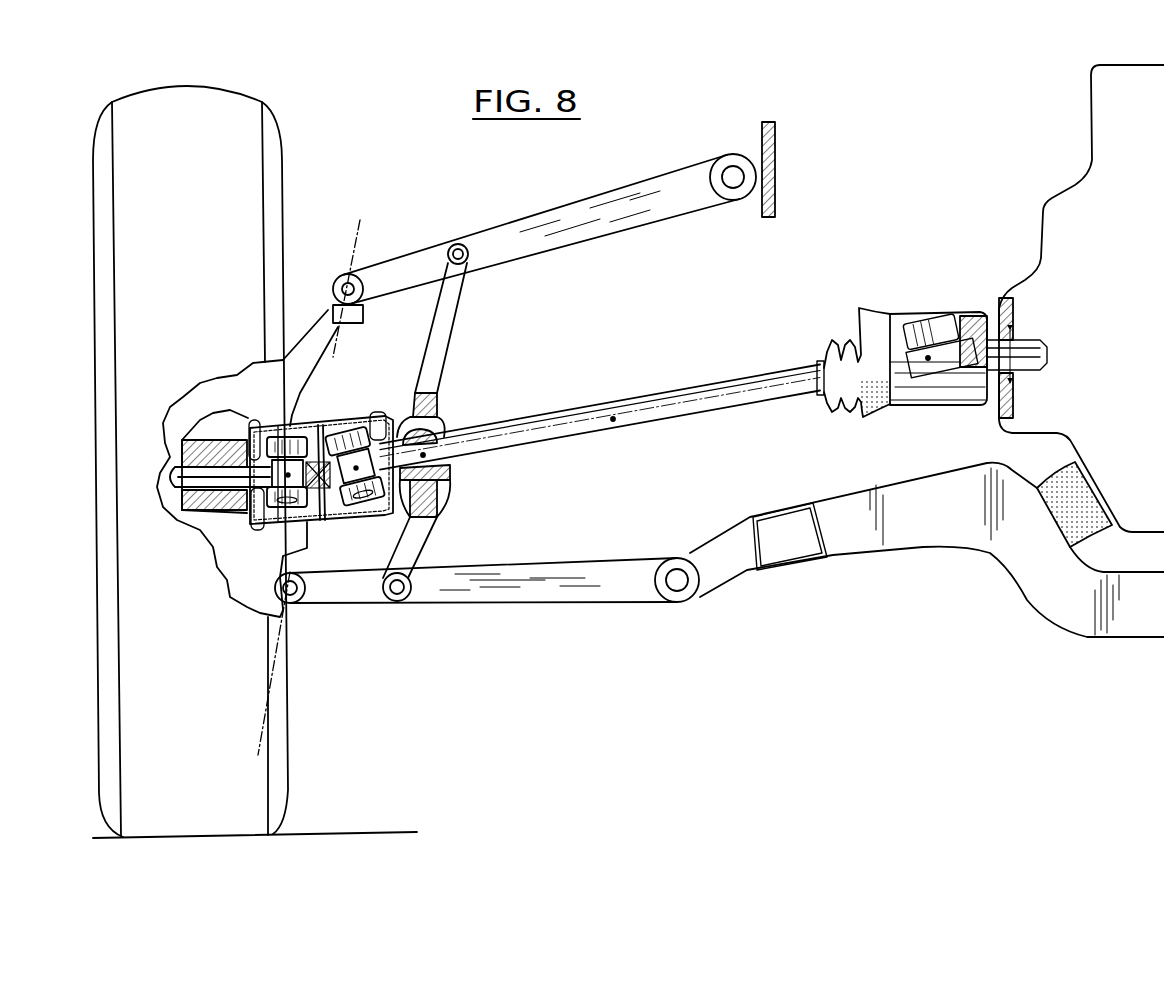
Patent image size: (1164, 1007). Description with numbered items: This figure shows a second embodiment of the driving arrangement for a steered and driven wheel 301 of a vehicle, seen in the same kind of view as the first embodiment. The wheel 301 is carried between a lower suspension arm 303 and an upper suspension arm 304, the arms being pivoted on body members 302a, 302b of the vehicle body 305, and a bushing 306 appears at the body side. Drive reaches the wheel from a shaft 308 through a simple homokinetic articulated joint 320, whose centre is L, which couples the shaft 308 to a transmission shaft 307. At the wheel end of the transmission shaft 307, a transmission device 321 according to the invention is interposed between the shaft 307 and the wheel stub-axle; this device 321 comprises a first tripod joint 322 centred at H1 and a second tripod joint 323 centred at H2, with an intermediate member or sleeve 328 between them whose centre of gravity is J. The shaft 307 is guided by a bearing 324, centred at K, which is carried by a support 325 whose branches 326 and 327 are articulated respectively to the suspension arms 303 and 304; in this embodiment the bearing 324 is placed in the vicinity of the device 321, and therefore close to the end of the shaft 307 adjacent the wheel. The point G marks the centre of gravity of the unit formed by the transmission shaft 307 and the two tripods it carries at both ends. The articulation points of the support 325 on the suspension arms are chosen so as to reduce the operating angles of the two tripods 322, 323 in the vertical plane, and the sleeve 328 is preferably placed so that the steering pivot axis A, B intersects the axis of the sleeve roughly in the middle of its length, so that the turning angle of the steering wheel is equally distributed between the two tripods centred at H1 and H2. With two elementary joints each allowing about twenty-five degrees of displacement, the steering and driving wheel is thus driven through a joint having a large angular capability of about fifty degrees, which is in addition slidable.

The wheel/tire 301 is at (237, 185).
The lower body member 302a is at (795, 565).
The upper body member 302b is at (770, 195).
The suspension arm 303 is at (500, 600).
The suspension arm 304 is at (565, 226).
The vehicle body 305 is at (1105, 112).
The rubber bushing 306 is at (1082, 522).
The transmission shaft 307 is at (665, 405).
The shaft 308 is at (1028, 345).
The homokinetic articulated joint 320 is at (950, 283).
The transmission device 321 is at (340, 418).
The tripod joint 322 is at (353, 420).
The tripod joint 323 is at (247, 415).
The bearing 324 is at (447, 416).
The support 325 is at (440, 400).
The branch 326 is at (418, 527).
The branch 327 is at (447, 312).
The intermediate member 328 is at (300, 427).
The pivot axis point A is at (263, 663).
The pivot axis point B is at (348, 288).
The centre of gravity G is at (613, 421).
The centre of the first tripod H1 is at (356, 470).
The centre of the second tripod H2 is at (286, 475).
The centre of gravity of the intermediate member J is at (318, 490).
The centre of the bearing K is at (425, 457).
The centre of the articulated joint L is at (929, 360).